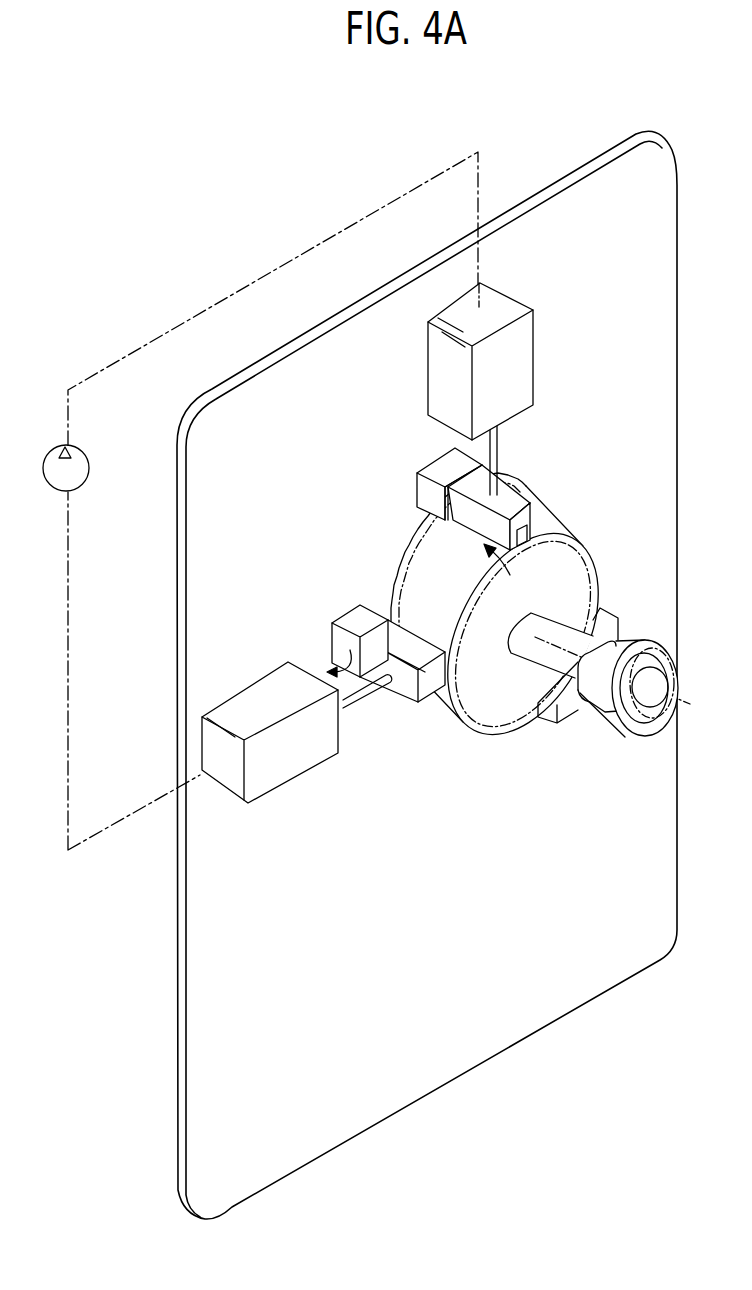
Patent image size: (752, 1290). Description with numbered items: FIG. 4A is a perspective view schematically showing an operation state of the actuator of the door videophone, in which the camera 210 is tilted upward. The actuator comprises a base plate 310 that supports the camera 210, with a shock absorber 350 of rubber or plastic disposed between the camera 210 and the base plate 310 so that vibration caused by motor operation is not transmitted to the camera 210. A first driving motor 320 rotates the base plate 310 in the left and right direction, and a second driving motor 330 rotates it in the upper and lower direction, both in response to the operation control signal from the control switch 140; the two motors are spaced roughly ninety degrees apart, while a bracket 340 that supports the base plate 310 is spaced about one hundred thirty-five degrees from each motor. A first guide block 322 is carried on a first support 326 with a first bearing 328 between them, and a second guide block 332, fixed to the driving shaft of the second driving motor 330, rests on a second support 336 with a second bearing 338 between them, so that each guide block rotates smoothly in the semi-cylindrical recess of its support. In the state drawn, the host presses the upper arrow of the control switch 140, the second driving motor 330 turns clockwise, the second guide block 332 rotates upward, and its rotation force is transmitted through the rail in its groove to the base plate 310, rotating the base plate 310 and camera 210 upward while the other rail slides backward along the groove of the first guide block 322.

The control switch 140 is at (80, 450).
The camera 210 is at (600, 710).
The base plate 310 is at (558, 550).
The first driving motor 320 is at (523, 350).
The first guide block 322 is at (507, 495).
The first support 326 is at (423, 498).
The first bearing 328 is at (445, 470).
The second driving motor 330 is at (275, 775).
The second guide block 332 is at (402, 687).
The second support 336 is at (360, 618).
The second bearing 338 is at (332, 650).
The bracket 340 is at (597, 605).
The shock absorber 350 is at (542, 648).